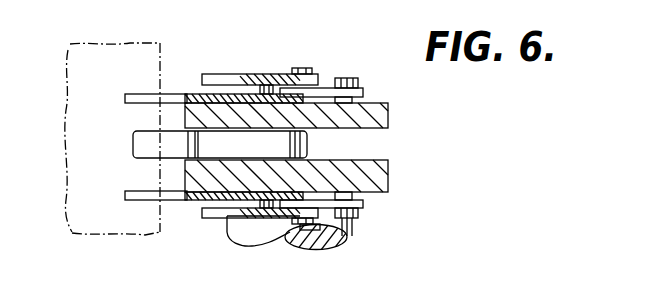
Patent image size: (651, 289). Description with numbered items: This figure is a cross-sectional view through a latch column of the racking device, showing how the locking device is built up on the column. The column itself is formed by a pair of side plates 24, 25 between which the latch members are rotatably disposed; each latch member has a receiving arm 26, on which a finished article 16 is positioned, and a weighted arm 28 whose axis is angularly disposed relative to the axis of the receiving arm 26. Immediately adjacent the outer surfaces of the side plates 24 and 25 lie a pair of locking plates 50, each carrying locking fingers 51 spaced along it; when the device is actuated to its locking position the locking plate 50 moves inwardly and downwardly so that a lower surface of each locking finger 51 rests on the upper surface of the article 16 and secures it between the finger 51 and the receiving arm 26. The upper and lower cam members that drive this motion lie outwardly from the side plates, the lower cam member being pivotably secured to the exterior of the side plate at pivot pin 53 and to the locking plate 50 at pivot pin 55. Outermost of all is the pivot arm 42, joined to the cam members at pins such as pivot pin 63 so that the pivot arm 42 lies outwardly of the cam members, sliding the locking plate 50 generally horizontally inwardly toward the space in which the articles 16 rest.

The finished article 16 is at (68, 209).
The side plate 24 is at (388, 173).
The side plate 25 is at (387, 121).
The receiving arm 26 is at (135, 146).
The weighted arm 28 is at (217, 152).
The pivot arm 42 is at (250, 80).
The locking plate 50 is at (190, 93).
The locking finger 51 is at (141, 94).
The pivot pin 53 is at (350, 82).
The pivot pin 55 is at (275, 90).
The pivot pin 63 is at (311, 72).